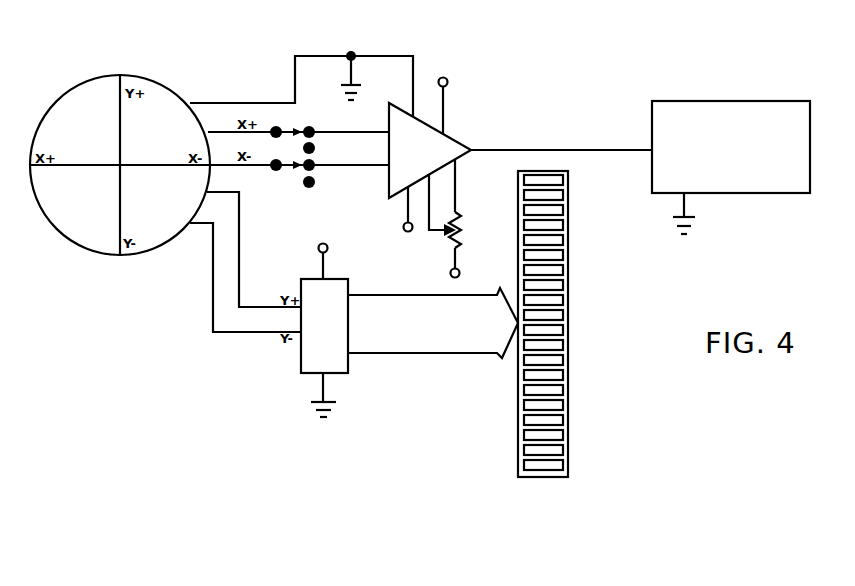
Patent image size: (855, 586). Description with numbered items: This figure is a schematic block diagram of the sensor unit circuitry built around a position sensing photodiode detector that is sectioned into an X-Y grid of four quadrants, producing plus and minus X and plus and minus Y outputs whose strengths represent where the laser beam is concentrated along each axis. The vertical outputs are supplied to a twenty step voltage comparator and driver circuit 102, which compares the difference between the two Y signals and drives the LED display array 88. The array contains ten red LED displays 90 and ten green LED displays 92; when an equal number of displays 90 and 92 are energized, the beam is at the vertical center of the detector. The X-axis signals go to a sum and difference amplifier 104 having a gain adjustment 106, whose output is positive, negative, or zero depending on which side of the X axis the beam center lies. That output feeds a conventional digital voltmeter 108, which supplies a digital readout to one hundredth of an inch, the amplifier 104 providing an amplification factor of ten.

The LED display array 88 is at (568, 358).
The red LED displays 90 is at (558, 240).
The green LED displays 92 is at (558, 405).
The twenty step voltage comparator and driver circuit 102 is at (331, 292).
The sum and difference amplifier 104 is at (443, 150).
The gain adjustment 106 is at (460, 222).
The digital voltmeter 108 is at (662, 160).